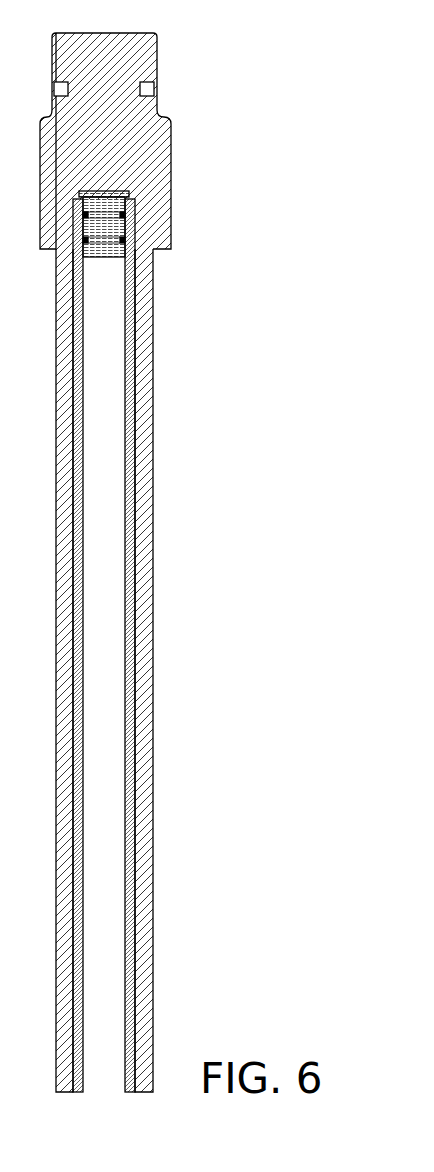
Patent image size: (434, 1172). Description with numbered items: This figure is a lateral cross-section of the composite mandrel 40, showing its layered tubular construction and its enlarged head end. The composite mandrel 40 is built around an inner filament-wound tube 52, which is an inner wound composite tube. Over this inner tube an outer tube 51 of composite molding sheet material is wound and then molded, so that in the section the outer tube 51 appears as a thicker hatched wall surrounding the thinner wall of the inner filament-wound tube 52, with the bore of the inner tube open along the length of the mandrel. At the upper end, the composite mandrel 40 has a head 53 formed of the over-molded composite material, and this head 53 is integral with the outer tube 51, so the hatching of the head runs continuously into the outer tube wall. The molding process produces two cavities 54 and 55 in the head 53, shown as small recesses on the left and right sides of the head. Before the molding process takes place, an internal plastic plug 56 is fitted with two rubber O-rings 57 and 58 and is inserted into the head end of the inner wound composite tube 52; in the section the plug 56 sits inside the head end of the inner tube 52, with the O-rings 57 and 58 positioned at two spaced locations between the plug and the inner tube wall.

The composite mandrel 40 is at (136, 562).
The outer tube 51 is at (143, 410).
The inner filament-wound tube 52 is at (132, 460).
The head 53 is at (160, 155).
The cavity 54 is at (54, 90).
The cavity 55 is at (154, 90).
The internal plastic plug 56 is at (110, 193).
The rubber O-ring 57 is at (123, 215).
The rubber O-ring 58 is at (123, 238).